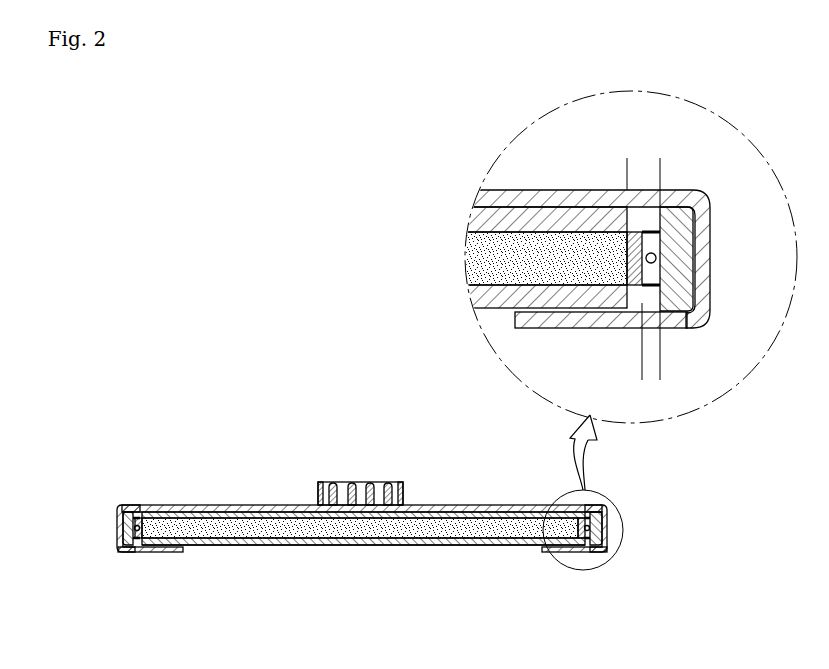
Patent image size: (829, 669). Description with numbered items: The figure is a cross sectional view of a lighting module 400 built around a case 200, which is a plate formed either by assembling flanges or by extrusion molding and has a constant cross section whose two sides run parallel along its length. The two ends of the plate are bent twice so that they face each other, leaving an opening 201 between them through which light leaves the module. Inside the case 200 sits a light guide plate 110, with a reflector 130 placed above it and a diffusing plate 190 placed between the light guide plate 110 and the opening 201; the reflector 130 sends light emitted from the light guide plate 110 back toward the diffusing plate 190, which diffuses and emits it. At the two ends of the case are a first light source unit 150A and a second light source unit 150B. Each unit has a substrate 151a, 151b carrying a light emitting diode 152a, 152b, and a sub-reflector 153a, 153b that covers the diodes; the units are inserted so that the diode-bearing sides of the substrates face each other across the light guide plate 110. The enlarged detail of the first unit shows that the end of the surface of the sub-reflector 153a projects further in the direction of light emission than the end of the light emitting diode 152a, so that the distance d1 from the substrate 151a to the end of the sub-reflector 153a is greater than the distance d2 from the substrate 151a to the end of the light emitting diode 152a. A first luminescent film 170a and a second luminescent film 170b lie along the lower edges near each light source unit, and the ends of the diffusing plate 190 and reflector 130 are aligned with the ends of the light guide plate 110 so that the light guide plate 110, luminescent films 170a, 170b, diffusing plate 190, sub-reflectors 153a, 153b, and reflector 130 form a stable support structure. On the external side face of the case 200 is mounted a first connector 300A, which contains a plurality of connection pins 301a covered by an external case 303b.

The lighting module 400 is at (172, 420).
The case 200 is at (195, 507).
The reflector 130 is at (463, 514).
The light guide plate 110 is at (318, 530).
The diffusing plate 190 is at (428, 541).
The opening 201 is at (378, 545).
The first connector 300A is at (351, 458).
The connection pins 301a is at (320, 482).
The external case 303b is at (360, 472).
The first light source unit 150A is at (603, 400).
The second light source unit 150B is at (100, 571).
The substrate 151a is at (602, 545).
The substrate 151b is at (125, 528).
The light emitting diode 152a is at (680, 608).
The light emitting diode 152b is at (141, 559).
The sub-reflector 153a is at (607, 506).
The sub-reflector 153b is at (118, 512).
The first luminescent film 170a is at (575, 553).
The second luminescent film 170b is at (147, 553).
The distance between substrate and end of sub-reflector surface d1 is at (597, 168).
The distance between substrate and end of light emitting diode d2 is at (622, 368).